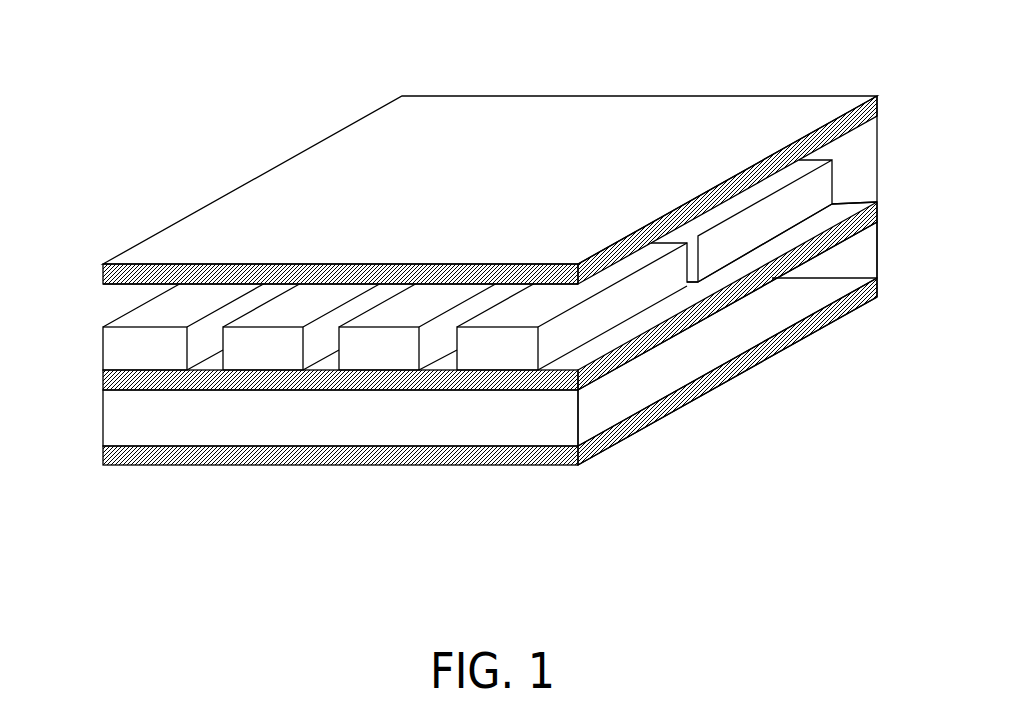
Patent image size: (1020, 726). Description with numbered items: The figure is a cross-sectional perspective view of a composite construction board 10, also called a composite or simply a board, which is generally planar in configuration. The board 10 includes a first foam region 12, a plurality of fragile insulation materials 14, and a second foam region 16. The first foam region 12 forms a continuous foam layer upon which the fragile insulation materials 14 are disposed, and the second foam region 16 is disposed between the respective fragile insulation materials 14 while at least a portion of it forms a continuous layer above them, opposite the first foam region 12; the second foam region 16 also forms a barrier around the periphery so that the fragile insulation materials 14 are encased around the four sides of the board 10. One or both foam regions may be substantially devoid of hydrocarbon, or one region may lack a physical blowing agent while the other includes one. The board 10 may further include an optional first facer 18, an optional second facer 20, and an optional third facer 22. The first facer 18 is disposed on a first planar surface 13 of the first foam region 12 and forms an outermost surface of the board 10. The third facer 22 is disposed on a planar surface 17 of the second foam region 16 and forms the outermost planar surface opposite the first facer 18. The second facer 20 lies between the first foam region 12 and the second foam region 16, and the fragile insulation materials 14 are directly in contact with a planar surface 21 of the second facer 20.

The construction board 10 is at (244, 131).
The first foam region 12 is at (117, 411).
The first planar surface 13 is at (188, 448).
The fragile insulation material 14 is at (500, 350).
The second foam region 16 is at (117, 310).
The planar surface 17 is at (122, 287).
The first facer 18 is at (877, 292).
The second facer 20 is at (849, 242).
The planar surface 21 is at (821, 224).
The third facer 22 is at (877, 96).